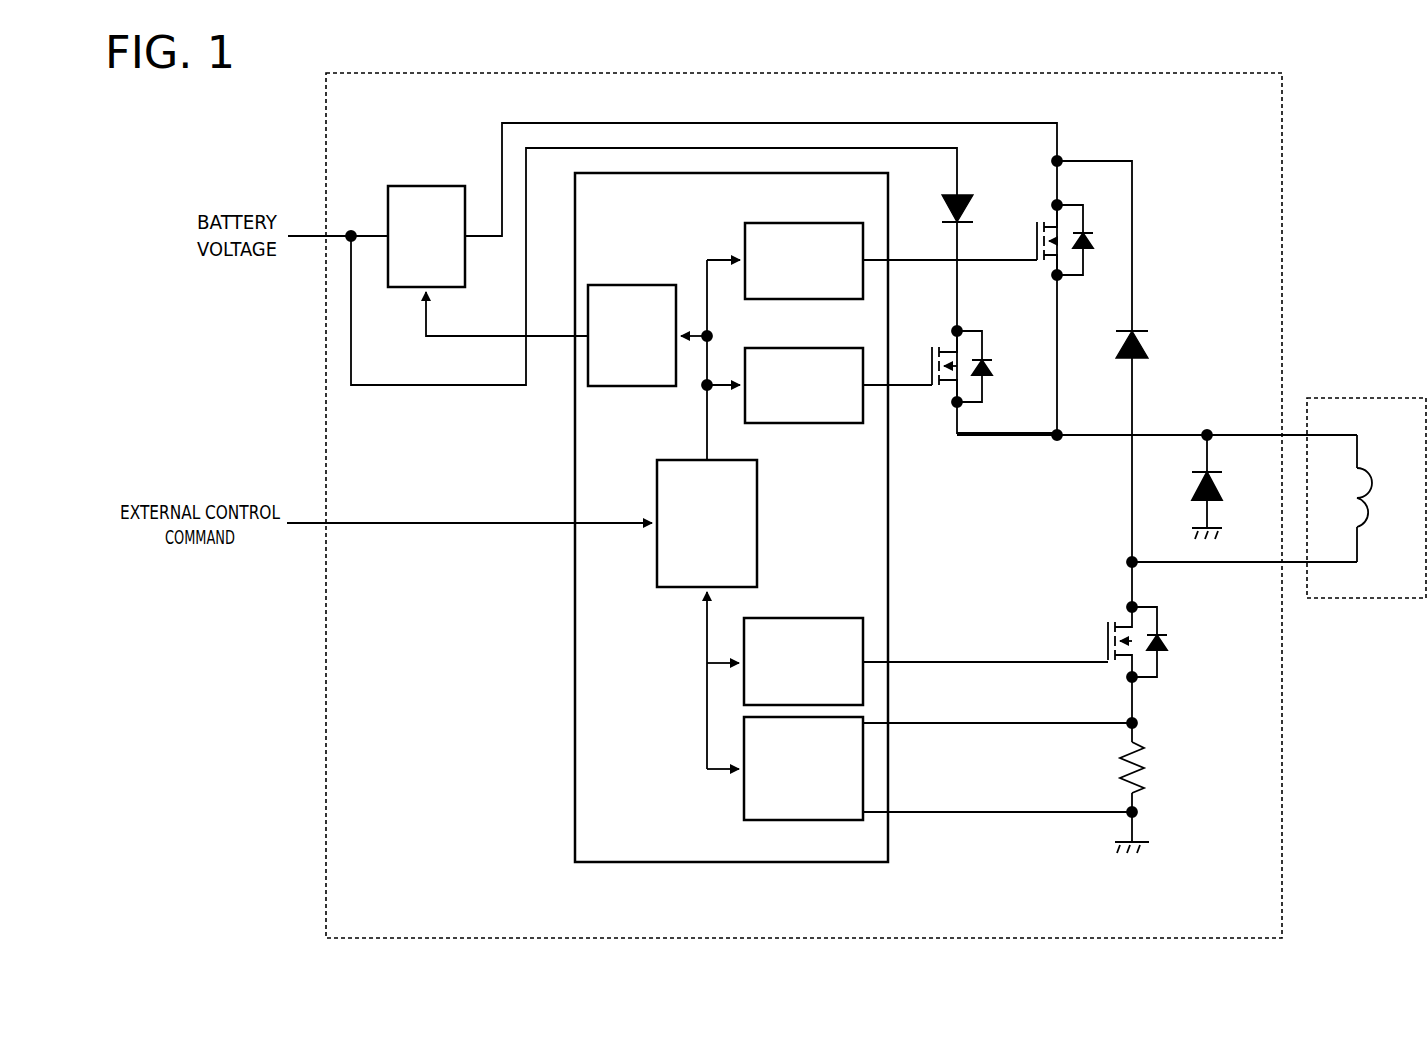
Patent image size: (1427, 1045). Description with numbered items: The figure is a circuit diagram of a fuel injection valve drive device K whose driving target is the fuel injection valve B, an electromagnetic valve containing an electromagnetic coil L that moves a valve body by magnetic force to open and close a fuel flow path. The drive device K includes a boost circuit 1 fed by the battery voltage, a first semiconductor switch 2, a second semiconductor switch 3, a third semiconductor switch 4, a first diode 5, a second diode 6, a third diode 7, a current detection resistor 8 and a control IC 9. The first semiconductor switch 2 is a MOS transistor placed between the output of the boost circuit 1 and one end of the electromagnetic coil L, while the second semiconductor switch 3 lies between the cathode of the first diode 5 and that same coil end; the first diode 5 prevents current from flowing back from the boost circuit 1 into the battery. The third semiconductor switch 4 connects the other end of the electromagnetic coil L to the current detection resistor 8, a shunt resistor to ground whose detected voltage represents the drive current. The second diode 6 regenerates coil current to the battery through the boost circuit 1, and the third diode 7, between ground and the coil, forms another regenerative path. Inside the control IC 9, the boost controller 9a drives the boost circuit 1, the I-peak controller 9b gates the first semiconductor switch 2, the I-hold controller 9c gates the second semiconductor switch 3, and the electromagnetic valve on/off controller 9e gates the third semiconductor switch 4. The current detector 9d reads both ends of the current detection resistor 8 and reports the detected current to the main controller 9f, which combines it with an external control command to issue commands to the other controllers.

The boost circuit 1 is at (436, 186).
The first semiconductor switch 2 is at (1029, 220).
The second semiconductor switch 3 is at (926, 350).
The third semiconductor switch 4 is at (1100, 624).
The first diode 5 is at (945, 200).
The second diode 6 is at (1150, 349).
The third diode 7 is at (1225, 488).
The current detection resistor 8 is at (1148, 765).
The control IC 9 is at (888, 515).
The boost controller 9a is at (640, 285).
The I-peak controller 9b is at (805, 223).
The I-hold controller 9c is at (805, 348).
The current detector 9d is at (744, 812).
The electromagnetic valve on/off controller 9e is at (815, 618).
The main controller 9f is at (757, 498).
The fuel injection valve drive device K is at (1282, 264).
The fuel injection valve B is at (1370, 398).
The electromagnetic coil L is at (1372, 490).